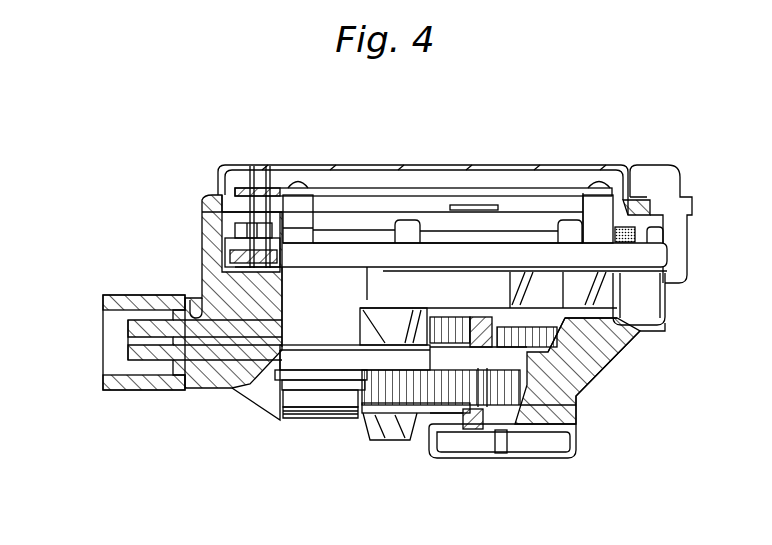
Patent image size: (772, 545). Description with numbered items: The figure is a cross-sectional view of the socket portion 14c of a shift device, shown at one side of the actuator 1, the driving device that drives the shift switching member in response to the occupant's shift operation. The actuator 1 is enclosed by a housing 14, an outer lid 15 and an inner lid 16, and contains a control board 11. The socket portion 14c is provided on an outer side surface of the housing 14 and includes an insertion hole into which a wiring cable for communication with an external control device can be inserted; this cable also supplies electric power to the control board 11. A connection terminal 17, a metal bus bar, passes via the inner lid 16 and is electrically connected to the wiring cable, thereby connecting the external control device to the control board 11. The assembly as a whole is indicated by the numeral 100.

The drive unit 100 is at (98, 128).
The actuator 1 is at (96, 246).
The control board 11 is at (357, 186).
The housing 14 is at (262, 403).
The socket portion 14c is at (133, 292).
The outer lid 15 is at (453, 163).
The inner lid 16 is at (667, 257).
The connection terminal 17 is at (252, 164).